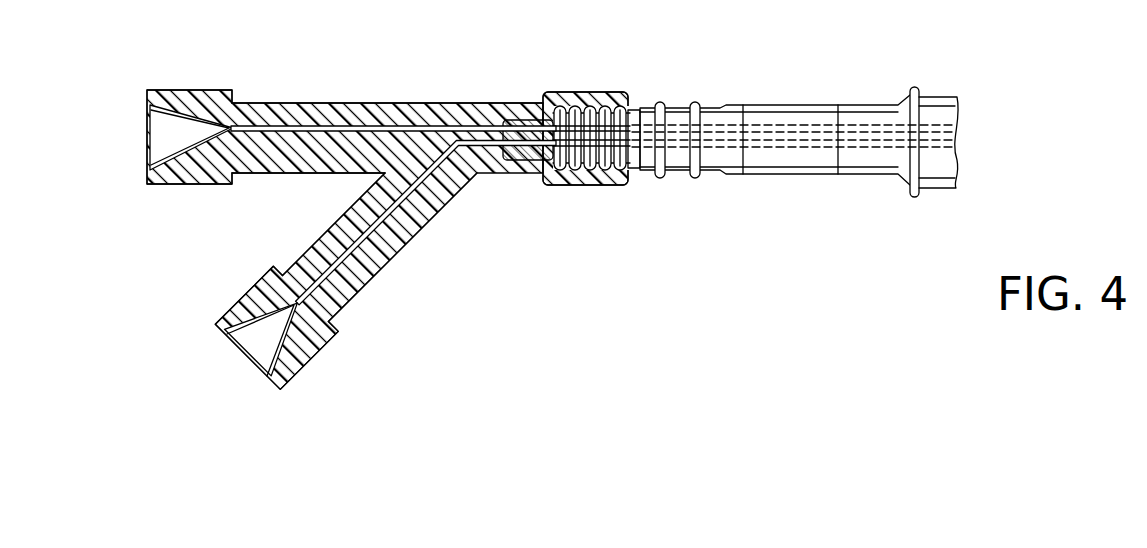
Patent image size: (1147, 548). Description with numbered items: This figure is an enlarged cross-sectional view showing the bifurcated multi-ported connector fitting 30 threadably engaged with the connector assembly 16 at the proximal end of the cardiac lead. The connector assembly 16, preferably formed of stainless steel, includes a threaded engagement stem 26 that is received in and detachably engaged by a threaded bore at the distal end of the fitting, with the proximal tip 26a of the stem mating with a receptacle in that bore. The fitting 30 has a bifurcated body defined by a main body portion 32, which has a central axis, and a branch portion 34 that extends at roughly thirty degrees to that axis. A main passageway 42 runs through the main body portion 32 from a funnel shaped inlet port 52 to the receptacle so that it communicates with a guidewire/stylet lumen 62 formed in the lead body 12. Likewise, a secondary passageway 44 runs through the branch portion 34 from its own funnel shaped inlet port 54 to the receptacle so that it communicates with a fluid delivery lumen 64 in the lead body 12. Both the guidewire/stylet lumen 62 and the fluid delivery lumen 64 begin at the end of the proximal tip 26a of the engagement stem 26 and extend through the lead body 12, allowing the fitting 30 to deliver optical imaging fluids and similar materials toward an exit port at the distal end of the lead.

The lead body 12 is at (943, 95).
The connector assembly 16 is at (843, 87).
The threaded engagement stem 26 is at (603, 110).
The proximal tip 26a is at (522, 153).
The multi-ported connector fitting 30 is at (393, 93).
The main body portion 32 is at (342, 167).
The branch portion 34 is at (368, 287).
The main passageway 42 is at (273, 130).
The secondary passageway 44 is at (317, 260).
The funnel shaped inlet port 52 is at (162, 143).
The funnel shaped inlet port 54 is at (260, 355).
The guidewire/stylet lumen 62 is at (762, 125).
The fluid delivery lumen 64 is at (768, 145).